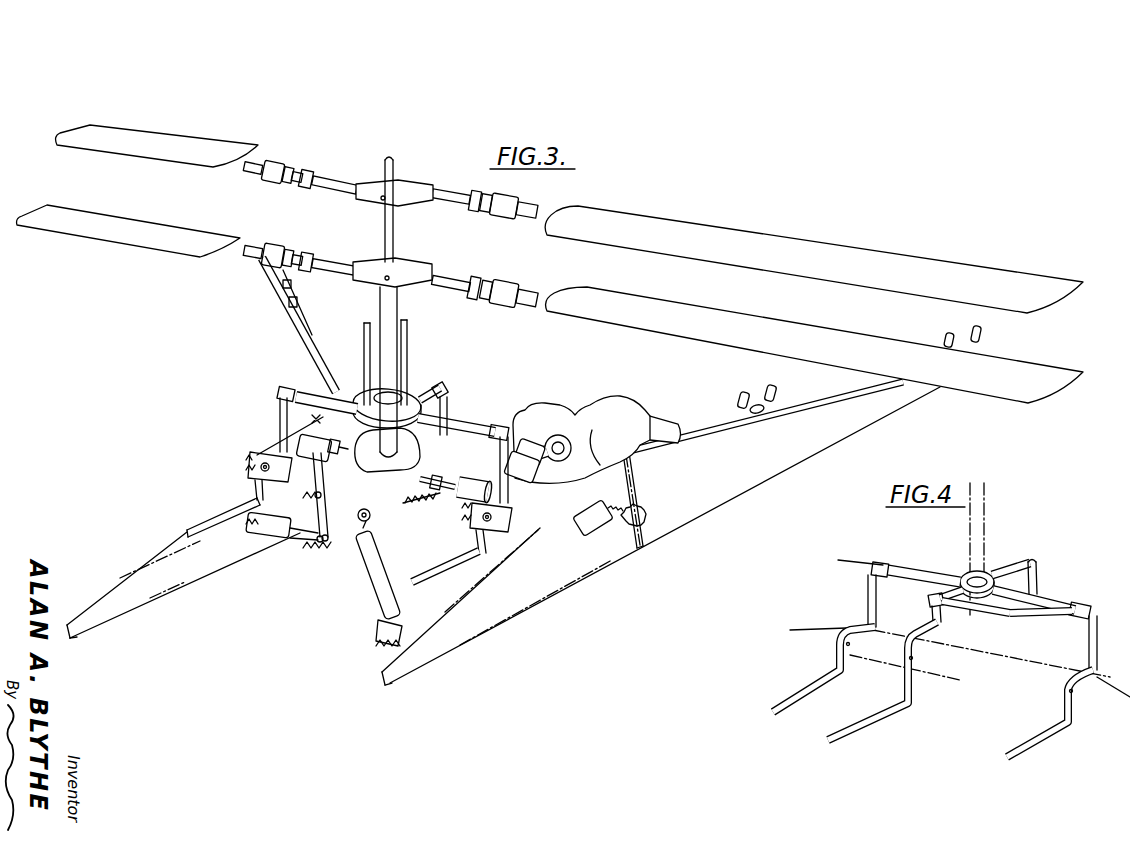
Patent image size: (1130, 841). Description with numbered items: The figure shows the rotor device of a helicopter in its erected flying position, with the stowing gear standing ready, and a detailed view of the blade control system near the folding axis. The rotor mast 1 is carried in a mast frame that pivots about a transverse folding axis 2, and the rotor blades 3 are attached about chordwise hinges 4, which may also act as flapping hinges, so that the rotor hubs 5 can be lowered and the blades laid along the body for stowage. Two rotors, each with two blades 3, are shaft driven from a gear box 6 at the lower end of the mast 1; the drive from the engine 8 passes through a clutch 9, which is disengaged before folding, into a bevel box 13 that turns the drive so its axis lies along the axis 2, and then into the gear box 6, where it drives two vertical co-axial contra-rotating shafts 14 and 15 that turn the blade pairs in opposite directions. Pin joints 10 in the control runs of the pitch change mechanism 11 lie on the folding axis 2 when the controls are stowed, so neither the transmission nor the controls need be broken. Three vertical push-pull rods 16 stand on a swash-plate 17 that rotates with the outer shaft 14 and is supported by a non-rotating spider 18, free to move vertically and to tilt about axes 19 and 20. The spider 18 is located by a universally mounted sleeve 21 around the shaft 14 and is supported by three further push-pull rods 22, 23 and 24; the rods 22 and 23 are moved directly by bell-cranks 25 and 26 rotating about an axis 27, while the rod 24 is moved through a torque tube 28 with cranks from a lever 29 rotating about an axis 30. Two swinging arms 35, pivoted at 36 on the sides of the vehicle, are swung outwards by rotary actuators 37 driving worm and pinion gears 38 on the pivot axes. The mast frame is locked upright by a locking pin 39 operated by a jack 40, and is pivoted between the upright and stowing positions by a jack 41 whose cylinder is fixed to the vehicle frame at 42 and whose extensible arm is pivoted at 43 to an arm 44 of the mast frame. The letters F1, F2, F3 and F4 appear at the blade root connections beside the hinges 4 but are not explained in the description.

In FIG. 3, the rotor mast 1 is at (393, 370).
In FIG. 3, the transverse folding axis 2 is at (255, 452).
In FIG. 4, the transverse folding axis 2 is at (1100, 675).
In FIG. 3, the rotor blades 3 is at (641, 240).
In FIG. 3, the chordwise hinges 4 is at (520, 223).
In FIG. 3, the rotor hubs 5 is at (395, 203).
In FIG. 3, the gear box 6 is at (410, 500).
In FIG. 3, the engine 8 is at (627, 410).
In FIG. 3, the clutch 9 is at (543, 475).
In FIG. 3, the pin joints 10 is at (240, 458).
In FIG. 4, the pin joints 10 is at (865, 628).
In FIG. 3, the rotor blade pitch change mechanism 11 is at (285, 427).
In FIG. 3, the bevel box 13 is at (467, 482).
In FIG. 3, the outer drive shaft 14 is at (385, 309).
In FIG. 3, the inner drive shaft 15 is at (385, 239).
In FIG. 3, the vertical push-pull rods 16 is at (370, 362).
In FIG. 3, the swash-plate 17 is at (373, 395).
In FIG. 3, the spider 18 is at (465, 426).
In FIG. 4, the spider 18 is at (997, 572).
In FIG. 3, the tilt axis 19 is at (285, 390).
In FIG. 4, the tilt axis 19 is at (874, 565).
In FIG. 3, the tilt axis 20 is at (447, 392).
In FIG. 4, the tilt axis 20 is at (933, 600).
In FIG. 4, the universally mounted sleeve 21 is at (962, 577).
In FIG. 4, the push-pull rod 22 is at (867, 585).
In FIG. 4, the push-pull rod 23 is at (1098, 643).
In FIG. 4, the push-pull rod 24 is at (1037, 580).
In FIG. 4, the bell-crank 25 is at (840, 670).
In FIG. 4, the bell-crank 26 is at (1070, 710).
In FIG. 4, the bell-crank axis 27 is at (977, 670).
In FIG. 4, the torque tube 28 is at (1000, 616).
In FIG. 4, the lever 29 is at (912, 677).
In FIG. 4, the lever axis 30 is at (884, 663).
In FIG. 3, the swinging arms 35 is at (307, 362).
In FIG. 3, the arm pivot 36 is at (627, 457).
In FIG. 3, the rotary actuators 37 is at (300, 463).
In FIG. 3, the worm and pinion gears 38 is at (641, 513).
In FIG. 3, the locking pin 39 is at (300, 534).
In FIG. 3, the jack 40 is at (257, 530).
In FIG. 3, the jack 41 is at (377, 588).
In FIG. 3, the cylinder fixing point 42 is at (394, 627).
In FIG. 3, the pivot 43 is at (370, 519).
In FIG. 3, the arm of mast frame 44 is at (348, 540).
In FIG. 3, the blade fitting F1 is at (263, 162).
In FIG. 3, the blade fitting F2 is at (532, 212).
In FIG. 3, the blade fitting F3 is at (240, 248).
In FIG. 3, the blade fitting F4 is at (533, 297).